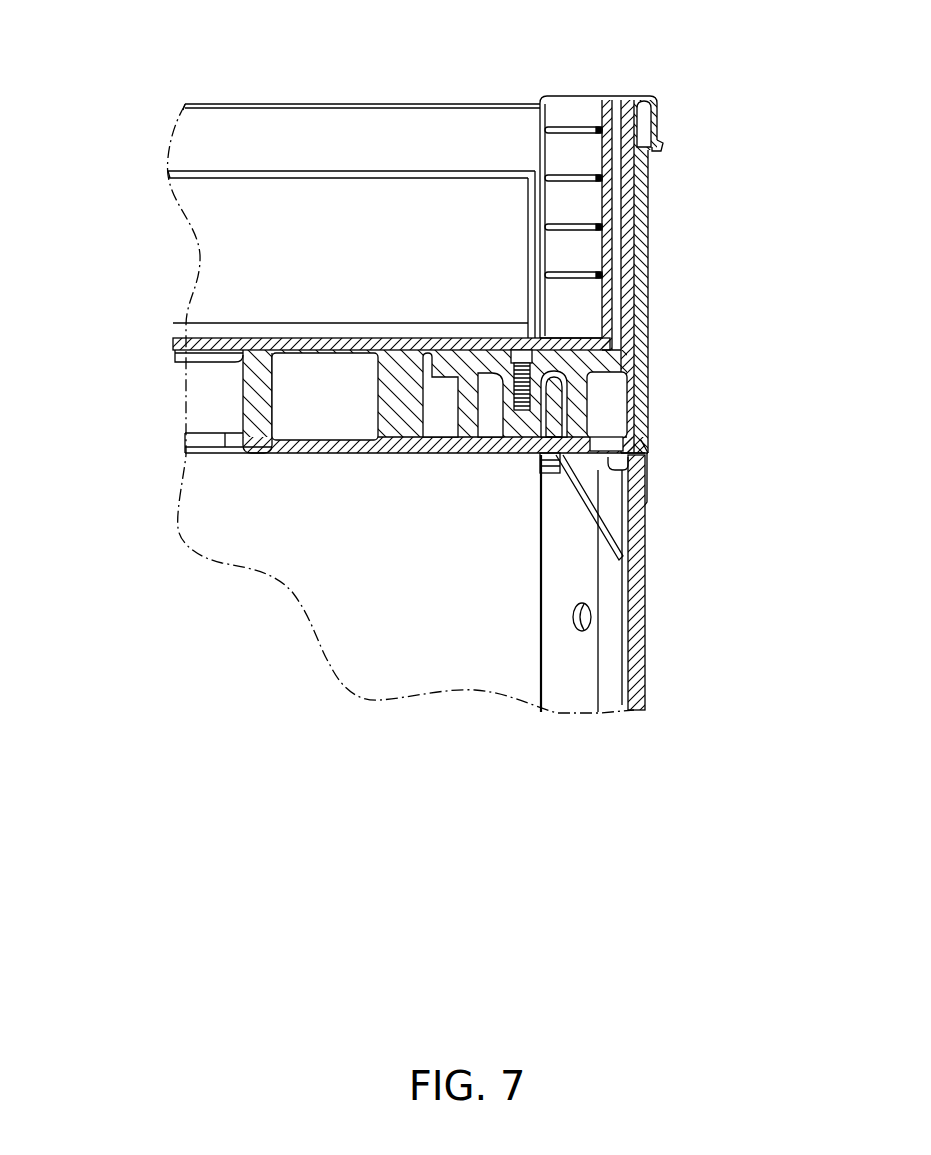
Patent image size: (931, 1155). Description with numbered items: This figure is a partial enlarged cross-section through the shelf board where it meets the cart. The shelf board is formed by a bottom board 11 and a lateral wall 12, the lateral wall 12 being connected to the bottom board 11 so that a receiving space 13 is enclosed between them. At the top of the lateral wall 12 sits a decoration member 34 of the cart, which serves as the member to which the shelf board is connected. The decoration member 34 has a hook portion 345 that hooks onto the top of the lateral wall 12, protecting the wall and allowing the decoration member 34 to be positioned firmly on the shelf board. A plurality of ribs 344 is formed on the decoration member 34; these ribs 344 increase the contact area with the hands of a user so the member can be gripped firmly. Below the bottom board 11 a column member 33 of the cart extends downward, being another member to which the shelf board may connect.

The bottom board 11 is at (325, 328).
The lateral wall 12 is at (352, 134).
The receiving space 13 is at (388, 215).
The column member 33 is at (608, 621).
The decoration member 34 is at (631, 94).
The ribs 344 is at (579, 131).
The hook portion 345 is at (658, 118).